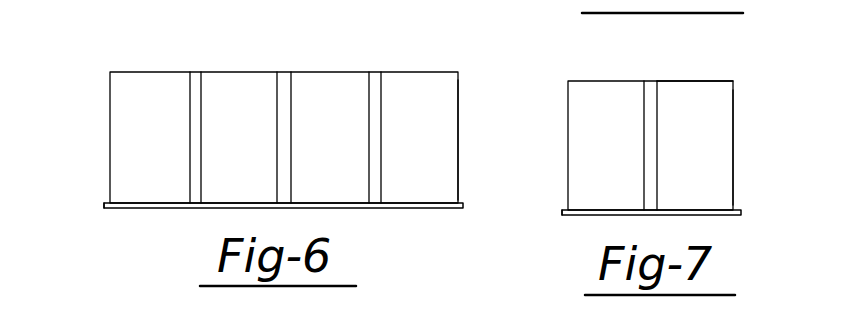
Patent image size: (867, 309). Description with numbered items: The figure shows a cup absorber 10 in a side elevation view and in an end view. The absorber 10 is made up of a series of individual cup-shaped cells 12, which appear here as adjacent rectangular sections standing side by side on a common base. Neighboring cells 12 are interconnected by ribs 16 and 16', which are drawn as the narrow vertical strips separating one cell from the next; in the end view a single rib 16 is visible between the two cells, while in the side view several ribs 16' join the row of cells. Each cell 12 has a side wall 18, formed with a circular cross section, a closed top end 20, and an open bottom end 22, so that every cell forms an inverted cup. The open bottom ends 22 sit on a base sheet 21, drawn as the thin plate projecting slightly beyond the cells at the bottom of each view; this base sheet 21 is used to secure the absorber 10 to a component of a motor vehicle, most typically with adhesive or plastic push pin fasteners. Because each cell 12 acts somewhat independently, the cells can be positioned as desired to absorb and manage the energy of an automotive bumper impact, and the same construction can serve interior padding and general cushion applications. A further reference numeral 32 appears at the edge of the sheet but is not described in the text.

In FIG. 6, the absorber 10 is at (124, 57).
In FIG. 7, the absorber 10 is at (649, 60).
In FIG. 6, the cup-shaped cell 12 is at (449, 64).
In FIG. 7, the cup-shaped cell 12 is at (724, 104).
In FIG. 7, the rib 16 is at (685, 119).
In FIG. 6, the rib 16' is at (403, 109).
In FIG. 6, the side wall 18 is at (458, 128).
In FIG. 7, the side wall 18 is at (733, 176).
In FIG. 6, the top end 20 is at (228, 72).
In FIG. 7, the top end 20 is at (718, 80).
In FIG. 6, the base sheet 21 is at (104, 204).
In FIG. 7, the base sheet 21 is at (562, 211).
In FIG. 6, the open bottom end 22 is at (165, 222).
In FIG. 7, the open bottom end 22 is at (593, 227).
In FIG. 6, the element 32 is at (394, 307).